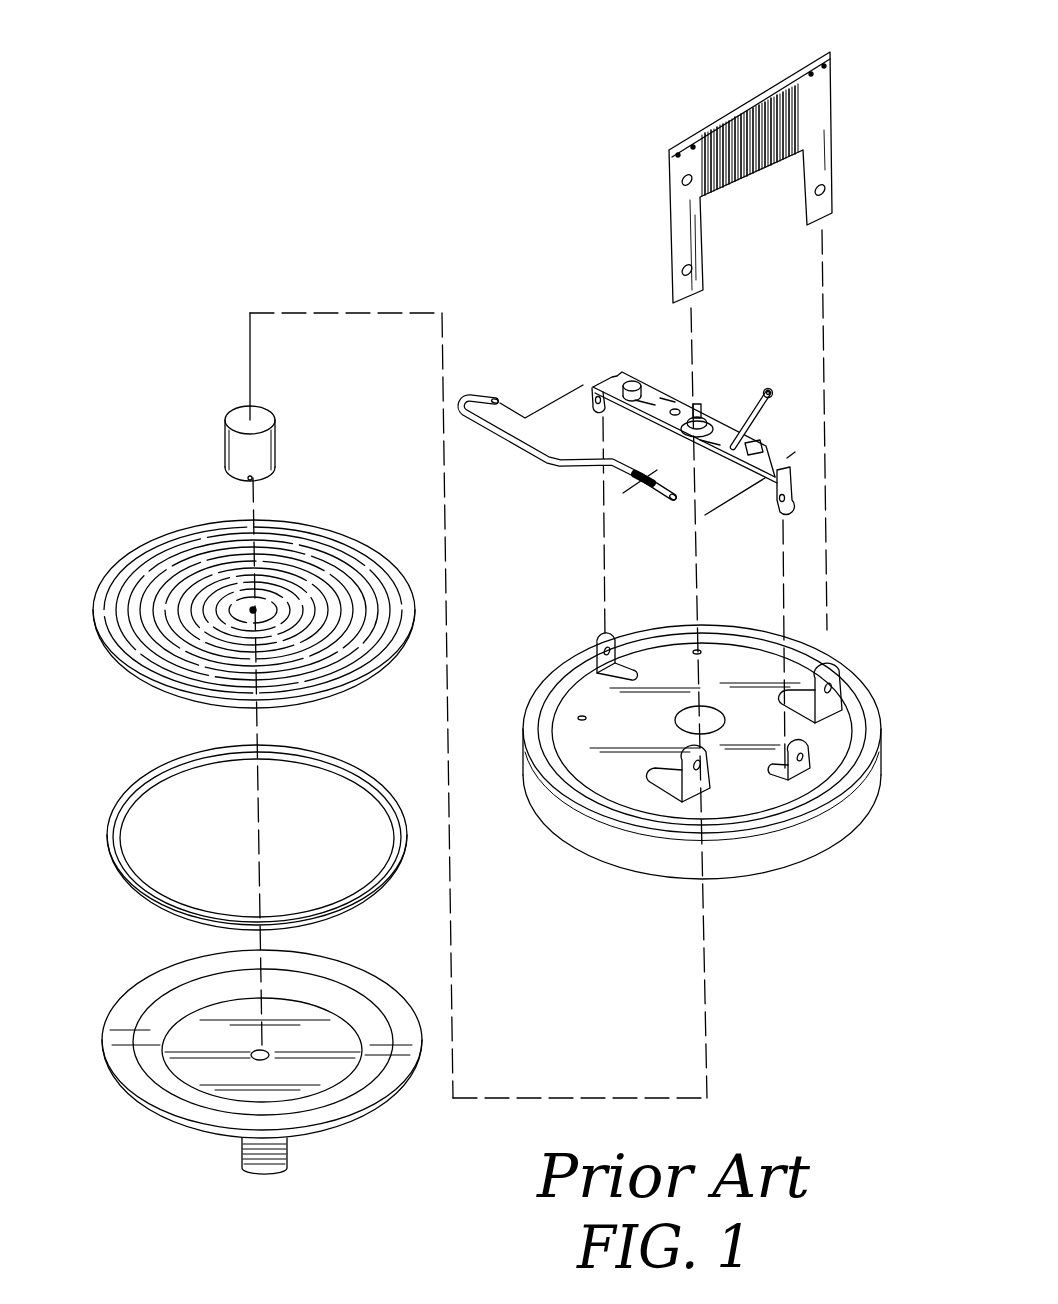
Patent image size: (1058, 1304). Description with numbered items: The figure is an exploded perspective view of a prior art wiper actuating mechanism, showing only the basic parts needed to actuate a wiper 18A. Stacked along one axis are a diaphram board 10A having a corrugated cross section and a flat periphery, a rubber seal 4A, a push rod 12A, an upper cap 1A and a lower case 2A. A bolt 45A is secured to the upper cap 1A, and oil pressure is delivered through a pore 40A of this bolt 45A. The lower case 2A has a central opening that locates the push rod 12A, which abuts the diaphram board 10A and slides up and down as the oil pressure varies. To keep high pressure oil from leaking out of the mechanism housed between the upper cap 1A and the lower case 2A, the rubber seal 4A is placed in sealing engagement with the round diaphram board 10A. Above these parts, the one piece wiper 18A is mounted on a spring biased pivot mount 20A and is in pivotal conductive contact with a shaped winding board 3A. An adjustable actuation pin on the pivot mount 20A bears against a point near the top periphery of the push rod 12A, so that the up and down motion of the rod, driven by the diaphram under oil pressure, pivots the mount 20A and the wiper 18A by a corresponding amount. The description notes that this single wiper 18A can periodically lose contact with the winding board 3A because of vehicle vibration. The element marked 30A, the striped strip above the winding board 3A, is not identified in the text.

The upper cap 1A is at (120, 1015).
The lower case 2A is at (620, 840).
The winding board 3A is at (667, 188).
The rubber seal 4A is at (127, 798).
The diaphram board 10A is at (135, 577).
The push rod 12A is at (222, 442).
The wiper 18A is at (762, 422).
The spring biased pivot mount 20A is at (717, 427).
The heater ribbon strip 30A is at (762, 93).
The pore 40A is at (240, 1057).
The bolt 45A is at (283, 1148).